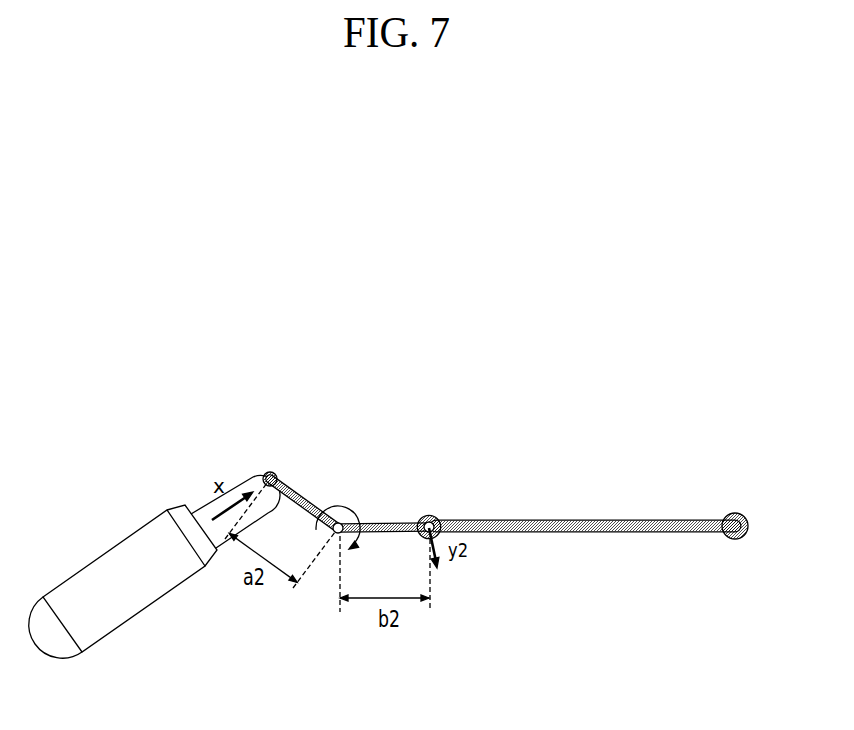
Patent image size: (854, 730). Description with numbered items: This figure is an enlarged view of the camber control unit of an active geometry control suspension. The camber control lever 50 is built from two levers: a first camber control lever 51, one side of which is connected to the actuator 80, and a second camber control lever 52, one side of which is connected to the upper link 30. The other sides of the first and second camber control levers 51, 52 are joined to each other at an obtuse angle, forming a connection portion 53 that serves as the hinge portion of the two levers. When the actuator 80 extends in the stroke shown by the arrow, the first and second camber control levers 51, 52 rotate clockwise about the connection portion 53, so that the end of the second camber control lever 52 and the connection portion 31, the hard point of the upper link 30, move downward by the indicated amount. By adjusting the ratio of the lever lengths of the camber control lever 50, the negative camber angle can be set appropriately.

The actuator 80 is at (102, 553).
The camber control lever 50 is at (346, 470).
The first camber control lever 51 is at (292, 485).
The second camber control lever 52 is at (403, 523).
The connection portion 53 is at (338, 522).
The connection portion 31 is at (427, 514).
The upper link 30 is at (548, 520).